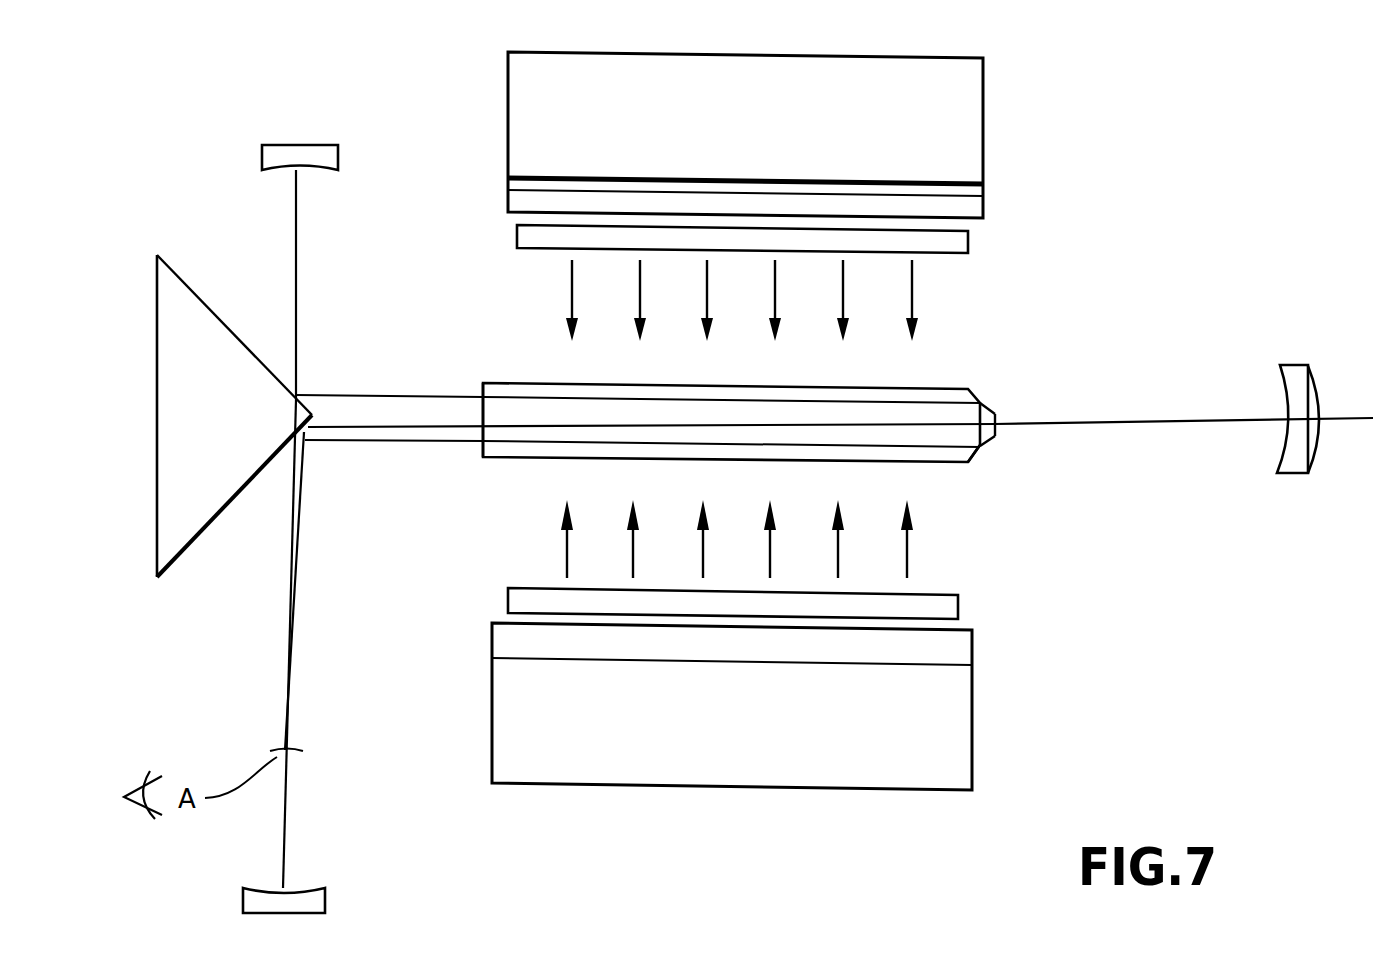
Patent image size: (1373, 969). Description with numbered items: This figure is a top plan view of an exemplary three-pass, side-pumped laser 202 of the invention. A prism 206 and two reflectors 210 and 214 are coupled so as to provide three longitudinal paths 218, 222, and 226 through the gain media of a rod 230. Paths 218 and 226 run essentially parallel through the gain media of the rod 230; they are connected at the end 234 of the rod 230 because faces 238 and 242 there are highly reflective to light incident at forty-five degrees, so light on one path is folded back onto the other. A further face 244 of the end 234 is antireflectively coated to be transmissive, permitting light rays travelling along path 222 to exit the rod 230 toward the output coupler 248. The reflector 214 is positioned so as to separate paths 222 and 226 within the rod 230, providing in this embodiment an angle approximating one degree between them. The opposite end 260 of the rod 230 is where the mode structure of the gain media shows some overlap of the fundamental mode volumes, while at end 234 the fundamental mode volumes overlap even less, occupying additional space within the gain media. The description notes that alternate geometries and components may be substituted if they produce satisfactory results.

The three-pass, side-pumped laser 202 is at (212, 143).
The prism 206 is at (235, 431).
The reflector 210 is at (338, 147).
The reflector 214 is at (325, 895).
The longitudinal path 218 is at (378, 395).
The longitudinal path 226 is at (387, 443).
The end of rod 260 is at (483, 385).
The longitudinal path 222 is at (918, 418).
The face 242 is at (993, 417).
The face 244 is at (997, 414).
The face 238 is at (980, 451).
The rod 230 is at (933, 463).
The end of rod 234 is at (1022, 443).
The output coupler 248 is at (1290, 365).